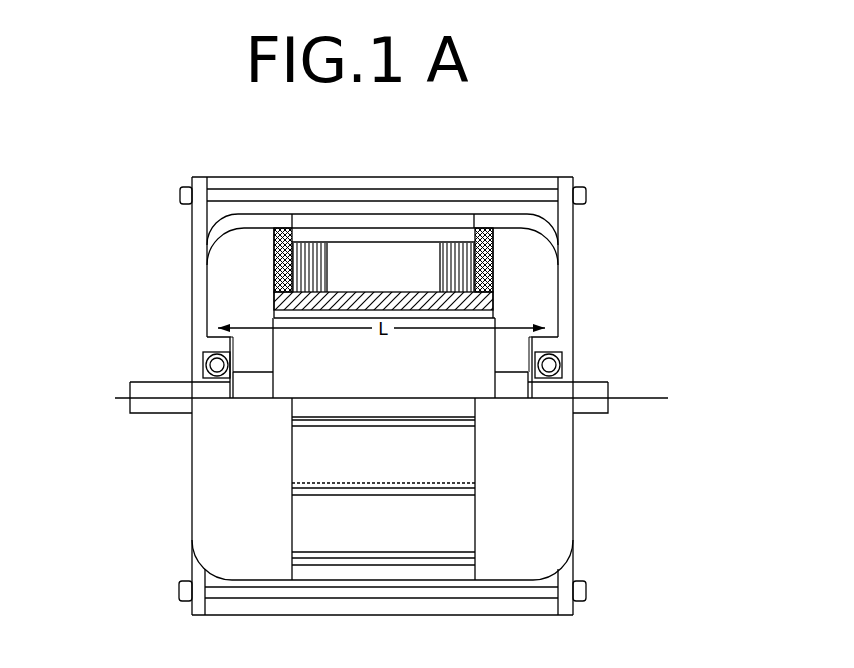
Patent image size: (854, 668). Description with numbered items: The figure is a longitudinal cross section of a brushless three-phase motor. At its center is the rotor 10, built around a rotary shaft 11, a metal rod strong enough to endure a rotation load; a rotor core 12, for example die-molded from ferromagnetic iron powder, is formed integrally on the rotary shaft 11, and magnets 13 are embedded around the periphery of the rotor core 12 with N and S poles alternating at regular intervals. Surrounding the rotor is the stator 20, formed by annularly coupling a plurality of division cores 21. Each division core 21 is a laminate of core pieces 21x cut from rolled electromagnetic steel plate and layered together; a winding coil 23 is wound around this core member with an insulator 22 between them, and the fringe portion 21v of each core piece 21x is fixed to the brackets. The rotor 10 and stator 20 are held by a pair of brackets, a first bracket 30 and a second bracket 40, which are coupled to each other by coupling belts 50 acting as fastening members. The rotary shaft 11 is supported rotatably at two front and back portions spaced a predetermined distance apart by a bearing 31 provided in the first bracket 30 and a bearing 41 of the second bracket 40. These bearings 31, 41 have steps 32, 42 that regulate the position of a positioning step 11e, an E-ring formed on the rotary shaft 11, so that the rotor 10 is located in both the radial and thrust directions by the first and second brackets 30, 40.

The rotor 10 is at (105, 285).
The rotary shaft 11 is at (128, 382).
The positioning step 11e is at (236, 362).
The rotor core 12 is at (273, 318).
The magnets 13 is at (273, 296).
The stator 20 is at (401, 209).
The division core 21 is at (493, 243).
The fringe portion 21v is at (348, 427).
The core piece 21x is at (300, 243).
The insulator 22 is at (446, 242).
The winding coil 23 is at (273, 252).
The first bracket 30 is at (207, 254).
The bearing 31 is at (207, 349).
The step 32 is at (204, 366).
The second bracket 40 is at (577, 475).
The bearing 41 is at (562, 364).
The step 42 is at (575, 373).
The coupling belts 50 is at (455, 196).